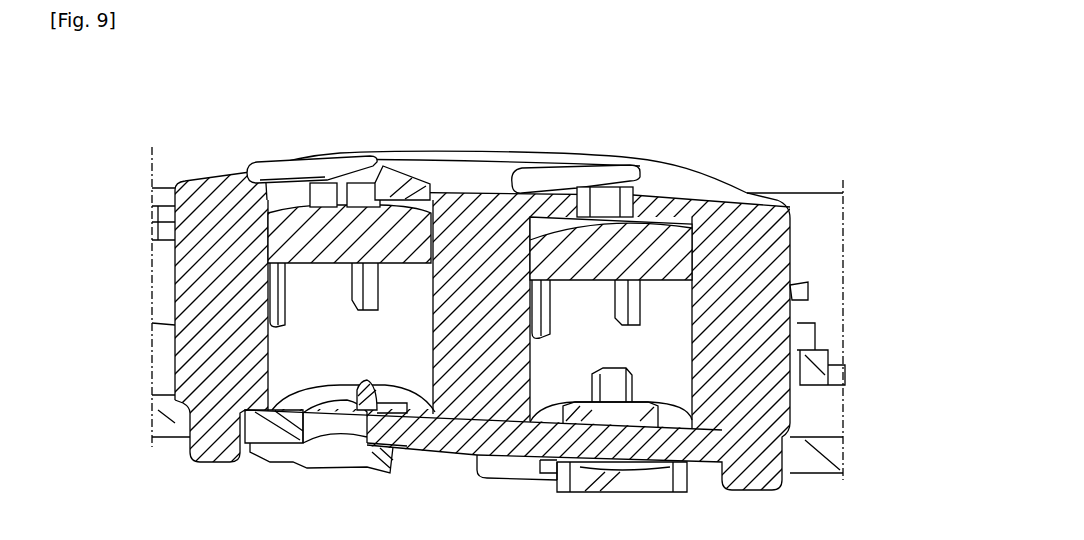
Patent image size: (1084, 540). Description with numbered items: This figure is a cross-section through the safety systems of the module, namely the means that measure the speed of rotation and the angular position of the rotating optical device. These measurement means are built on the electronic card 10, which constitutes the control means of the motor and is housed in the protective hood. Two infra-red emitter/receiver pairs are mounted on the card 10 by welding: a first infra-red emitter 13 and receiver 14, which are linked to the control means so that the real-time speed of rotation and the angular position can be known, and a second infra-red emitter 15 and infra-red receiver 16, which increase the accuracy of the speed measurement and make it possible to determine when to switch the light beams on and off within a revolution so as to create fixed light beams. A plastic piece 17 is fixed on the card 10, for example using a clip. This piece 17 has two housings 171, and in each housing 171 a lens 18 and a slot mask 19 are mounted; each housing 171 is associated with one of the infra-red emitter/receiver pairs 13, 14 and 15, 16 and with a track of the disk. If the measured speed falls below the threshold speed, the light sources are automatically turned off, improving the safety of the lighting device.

The electronic card 10 is at (815, 458).
The infra-red emitter 13 is at (643, 376).
The receiver 14 is at (637, 472).
The second infra-red emitter 15 is at (385, 430).
The infra-red receiver 16 is at (284, 472).
The plastic piece 17 is at (746, 144).
The housing 171 is at (557, 353).
The lens 18 is at (665, 262).
The slot mask 19 is at (642, 205).